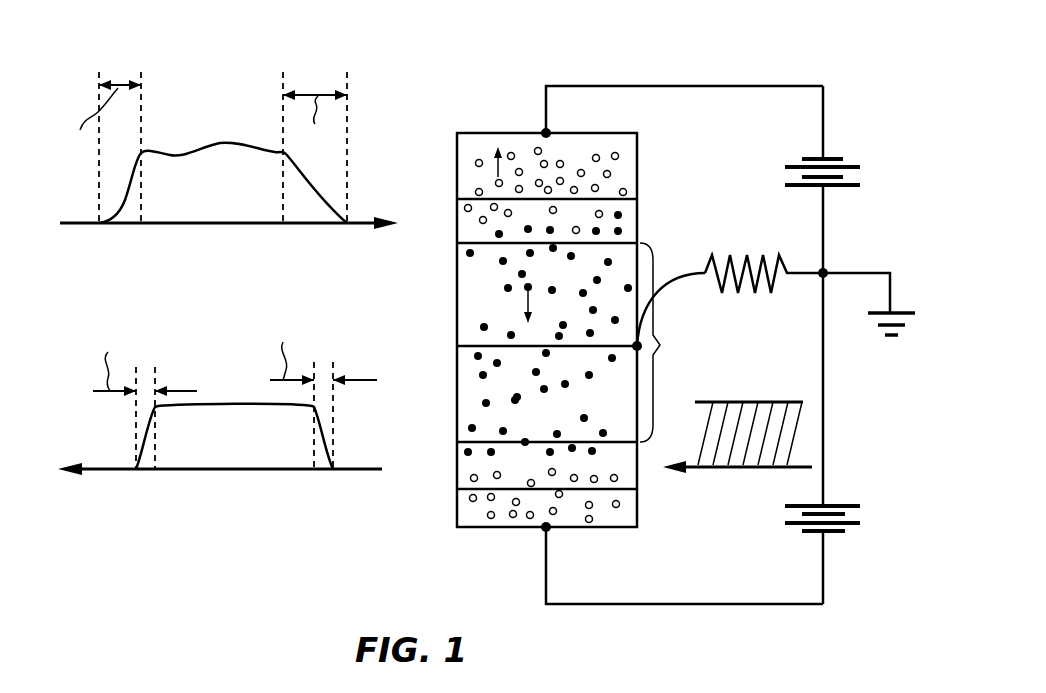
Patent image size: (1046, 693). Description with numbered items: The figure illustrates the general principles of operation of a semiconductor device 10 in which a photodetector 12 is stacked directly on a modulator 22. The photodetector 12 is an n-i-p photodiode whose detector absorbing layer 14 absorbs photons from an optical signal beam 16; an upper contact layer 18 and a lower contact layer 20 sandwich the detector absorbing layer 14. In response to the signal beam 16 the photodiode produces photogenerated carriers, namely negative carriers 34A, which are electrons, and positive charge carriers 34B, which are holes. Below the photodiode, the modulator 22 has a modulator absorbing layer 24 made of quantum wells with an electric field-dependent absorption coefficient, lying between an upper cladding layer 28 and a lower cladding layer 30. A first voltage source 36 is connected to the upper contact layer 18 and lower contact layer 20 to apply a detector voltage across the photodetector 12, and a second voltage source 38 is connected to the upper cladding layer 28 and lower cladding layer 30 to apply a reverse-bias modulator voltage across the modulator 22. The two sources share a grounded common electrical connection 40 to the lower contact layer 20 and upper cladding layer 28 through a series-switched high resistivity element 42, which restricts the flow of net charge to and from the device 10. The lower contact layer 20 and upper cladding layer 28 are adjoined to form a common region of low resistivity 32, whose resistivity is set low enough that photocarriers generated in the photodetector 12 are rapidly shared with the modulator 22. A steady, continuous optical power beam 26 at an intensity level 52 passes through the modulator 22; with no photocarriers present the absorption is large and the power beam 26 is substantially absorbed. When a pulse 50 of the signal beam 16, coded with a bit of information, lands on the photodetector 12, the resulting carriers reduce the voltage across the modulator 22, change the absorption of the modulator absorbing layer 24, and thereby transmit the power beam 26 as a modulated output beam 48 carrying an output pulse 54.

The semiconductor device 10 is at (458, 60).
The photodetector 12 is at (529, 229).
The detector absorbing layer 14 is at (640, 226).
The optical signal beam 16 is at (77, 226).
The upper contact layer 18 is at (639, 144).
The lower contact layer 20 is at (546, 292).
The modulator 22 is at (532, 469).
The modulator absorbing layer 24 is at (639, 460).
The optical power beam 26 is at (758, 469).
The upper cladding layer 28 is at (547, 397).
The lower cladding layer 30 is at (538, 542).
The common region of low resistivity 32 is at (660, 345).
The negative carriers 34A is at (478, 190).
The positive charge carriers 34B is at (429, 315).
The first voltage source 36 is at (792, 166).
The second voltage source 38 is at (794, 524).
The common electrical connection 40 is at (806, 270).
The high resistivity element 42 is at (742, 256).
The modulated output beam 48 is at (110, 472).
The pulse 50 is at (216, 143).
The intensity level 52 is at (766, 402).
The output pulse 54 is at (220, 403).